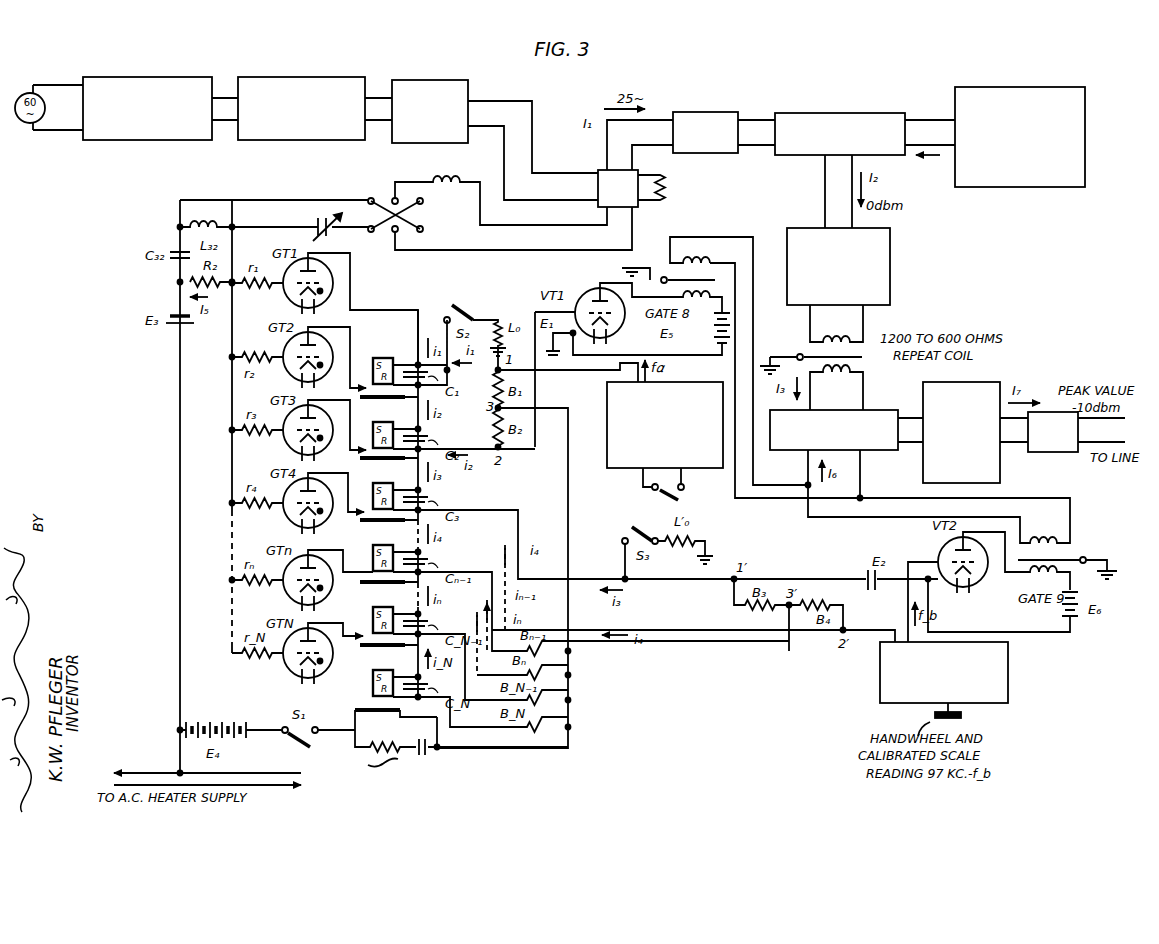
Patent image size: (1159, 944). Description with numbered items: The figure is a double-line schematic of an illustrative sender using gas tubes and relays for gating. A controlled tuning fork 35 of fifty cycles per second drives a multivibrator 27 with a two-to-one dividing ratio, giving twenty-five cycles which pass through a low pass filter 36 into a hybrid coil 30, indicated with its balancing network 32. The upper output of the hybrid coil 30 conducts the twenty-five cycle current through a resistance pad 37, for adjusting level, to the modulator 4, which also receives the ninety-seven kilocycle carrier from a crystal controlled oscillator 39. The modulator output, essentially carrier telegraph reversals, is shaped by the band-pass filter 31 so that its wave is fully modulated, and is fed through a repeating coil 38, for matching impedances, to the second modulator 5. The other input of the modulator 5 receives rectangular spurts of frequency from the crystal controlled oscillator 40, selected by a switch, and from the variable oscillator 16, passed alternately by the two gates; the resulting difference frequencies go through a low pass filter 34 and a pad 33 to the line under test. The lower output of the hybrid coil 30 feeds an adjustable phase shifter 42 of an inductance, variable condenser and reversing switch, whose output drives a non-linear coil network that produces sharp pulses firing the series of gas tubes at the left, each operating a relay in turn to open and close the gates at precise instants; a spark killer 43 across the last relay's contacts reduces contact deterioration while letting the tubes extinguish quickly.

The modulator 4 is at (893, 114).
The modulator 5 is at (880, 450).
The variable oscillator 16 is at (880, 680).
The multivibrator 27 is at (294, 77).
The hybrid coil 30 is at (638, 172).
The band-pass filter 31 is at (880, 263).
The balancing network 32 is at (668, 189).
The pad 33 is at (1050, 452).
The low pass filter 34 is at (1000, 456).
The controlled tuning fork 35 is at (124, 77).
The low pass filter 36 is at (424, 80).
The pad 37 is at (702, 112).
The repeating coil 38 is at (862, 359).
The oscillator 39 is at (1026, 187).
The oscillator 40 is at (710, 470).
The phase shifter 42 is at (444, 221).
The spark killer 43 is at (406, 758).